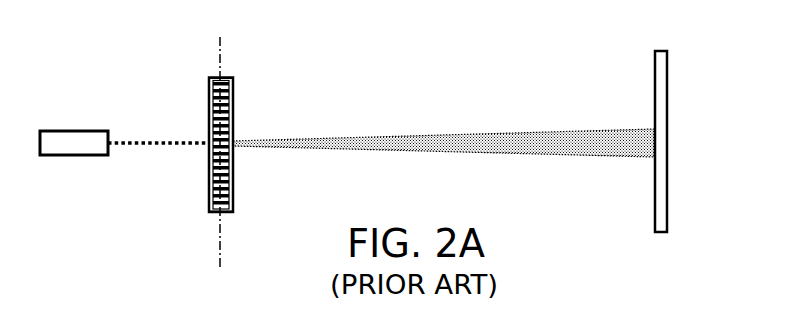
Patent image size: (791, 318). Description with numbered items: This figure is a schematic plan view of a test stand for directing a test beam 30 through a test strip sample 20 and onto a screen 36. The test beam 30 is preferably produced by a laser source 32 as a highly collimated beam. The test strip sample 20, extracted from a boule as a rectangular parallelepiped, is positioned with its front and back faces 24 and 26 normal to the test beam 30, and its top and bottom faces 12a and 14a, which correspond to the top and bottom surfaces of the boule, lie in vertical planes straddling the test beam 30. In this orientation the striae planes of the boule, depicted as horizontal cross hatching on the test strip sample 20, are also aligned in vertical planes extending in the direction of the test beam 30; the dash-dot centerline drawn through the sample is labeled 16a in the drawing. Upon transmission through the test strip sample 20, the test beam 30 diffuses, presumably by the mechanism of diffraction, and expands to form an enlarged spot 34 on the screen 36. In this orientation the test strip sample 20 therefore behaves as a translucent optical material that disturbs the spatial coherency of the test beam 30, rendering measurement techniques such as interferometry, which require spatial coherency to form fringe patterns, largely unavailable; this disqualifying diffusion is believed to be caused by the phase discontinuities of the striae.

The top face 12a is at (226, 77).
The bottom face 14a is at (213, 213).
The optical axis 16a is at (218, 60).
The test strip sample 20 is at (220, 157).
The front face 24 is at (209, 98).
The back face 26 is at (233, 188).
The test beam 30 is at (165, 145).
The laser source 32 is at (72, 145).
The enlarged spot 34 is at (646, 143).
The screen 36 is at (654, 93).